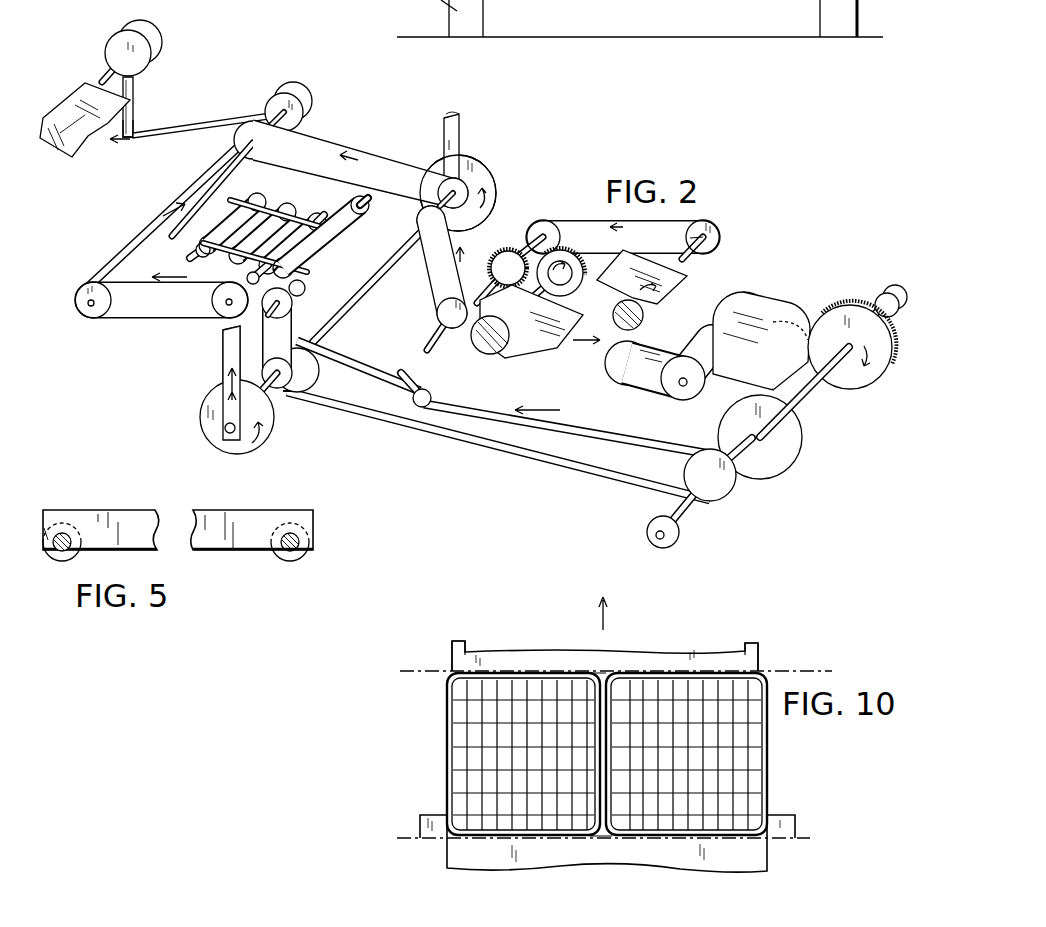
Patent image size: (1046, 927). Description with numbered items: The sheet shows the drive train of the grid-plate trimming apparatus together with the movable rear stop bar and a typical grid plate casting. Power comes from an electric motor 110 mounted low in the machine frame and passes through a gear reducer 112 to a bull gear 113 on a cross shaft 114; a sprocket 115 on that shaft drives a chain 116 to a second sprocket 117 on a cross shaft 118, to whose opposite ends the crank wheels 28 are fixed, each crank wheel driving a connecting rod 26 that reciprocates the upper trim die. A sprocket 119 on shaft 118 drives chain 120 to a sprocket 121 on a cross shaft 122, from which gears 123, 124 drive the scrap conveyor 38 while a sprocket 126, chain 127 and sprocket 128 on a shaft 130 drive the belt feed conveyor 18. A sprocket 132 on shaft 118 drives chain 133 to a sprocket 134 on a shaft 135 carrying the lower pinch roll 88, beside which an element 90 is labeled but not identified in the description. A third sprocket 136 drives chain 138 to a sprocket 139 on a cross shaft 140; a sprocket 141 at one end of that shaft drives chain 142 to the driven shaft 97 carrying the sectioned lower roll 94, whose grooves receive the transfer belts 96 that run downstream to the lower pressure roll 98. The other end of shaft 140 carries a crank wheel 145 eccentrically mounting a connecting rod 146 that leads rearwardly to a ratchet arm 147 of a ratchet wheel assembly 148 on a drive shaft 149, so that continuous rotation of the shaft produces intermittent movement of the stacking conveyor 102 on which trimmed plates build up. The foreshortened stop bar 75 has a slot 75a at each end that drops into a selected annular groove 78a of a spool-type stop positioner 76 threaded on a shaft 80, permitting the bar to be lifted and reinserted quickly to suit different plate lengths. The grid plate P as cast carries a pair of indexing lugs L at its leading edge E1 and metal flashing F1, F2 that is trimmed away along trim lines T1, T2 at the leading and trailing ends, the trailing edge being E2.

In FIG. 2, the ratchet wheel assembly 148 is at (122, 33).
In FIG. 2, the drive shaft 149 is at (102, 68).
In FIG. 2, the stacking conveyor 102 is at (118, 96).
In FIG. 2, the ratchet arm 147 is at (137, 113).
In FIG. 2, the connecting rod 146 is at (177, 125).
In FIG. 2, the crank wheel 145 is at (272, 100).
In FIG. 2, the sprocket 139 is at (248, 141).
In FIG. 2, the drive chain 138 is at (318, 134).
In FIG. 2, the cross shaft 140 is at (162, 236).
In FIG. 2, the sprocket 141 is at (86, 285).
In FIG. 2, the chain 142 is at (193, 285).
In FIG. 2, the lower pressure roll 98 is at (250, 212).
In FIG. 2, the transfer belts 96 is at (268, 236).
In FIG. 2, the driven lower roll 94 is at (317, 213).
In FIG. 2, the driven shaft 97 is at (247, 278).
In FIG. 2, the roller end 90 is at (355, 207).
In FIG. 2, the lower pinch roll 88 is at (353, 248).
In FIG. 2, the sprocket 134 is at (287, 314).
In FIG. 2, the shaft 135 is at (343, 306).
In FIG. 2, the chain 133 is at (297, 340).
In FIG. 2, the sprocket 132 is at (287, 391).
In FIG. 2, the second sprocket 117 is at (306, 380).
In FIG. 2, the cross shaft 118 is at (273, 392).
In FIG. 2, the connecting rod 26 is at (446, 116).
In FIG. 2, the crank wheel 28 is at (431, 158).
In FIG. 2, the third sprocket 136 is at (470, 190).
In FIG. 2, the sprocket 119 is at (416, 212).
In FIG. 2, the driven chain 120 is at (425, 257).
In FIG. 2, the sprocket 121 is at (442, 318).
In FIG. 2, the cross shaft 122 is at (431, 349).
In FIG. 2, the drive chain 127 is at (567, 219).
In FIG. 2, the sprocket 126 is at (531, 226).
In FIG. 2, the sprocket 128 is at (716, 225).
In FIG. 2, the shaft 130 is at (687, 243).
In FIG. 2, the gear 123 is at (497, 260).
In FIG. 2, the gear 124 is at (577, 261).
In FIG. 2, the scrap conveyor 38 is at (545, 347).
In FIG. 2, the belt feed conveyor 18 is at (683, 276).
In FIG. 2, the electric motor 110 is at (643, 348).
In FIG. 2, the gear reducer 112 is at (753, 303).
In FIG. 2, the bull gear 113 is at (848, 298).
In FIG. 2, the cross shaft 114 is at (803, 392).
In FIG. 2, the sprocket 115 is at (690, 474).
In FIG. 2, the drive chain 116 is at (434, 430).
In FIG. 5, the second stop bar 75 is at (120, 510).
In FIG. 5, the slots 75a is at (48, 528).
In FIG. 5, the stop positioner 76 is at (70, 560).
In FIG. 5, the shaft 80 is at (75, 555).
In FIG. 5, the annular groove 78a is at (287, 532).
In FIG. 10, the trim line T1 is at (427, 670).
In FIG. 10, the indexing lugs L is at (462, 643).
In FIG. 10, the leading edge E1 is at (560, 672).
In FIG. 10, the metal flashing F1 is at (607, 662).
In FIG. 10, the grid plate P is at (447, 735).
In FIG. 10, the trim line T2 is at (407, 837).
In FIG. 10, the metal flashing F2 is at (450, 872).
In FIG. 10, the bottom edge E2 is at (590, 834).